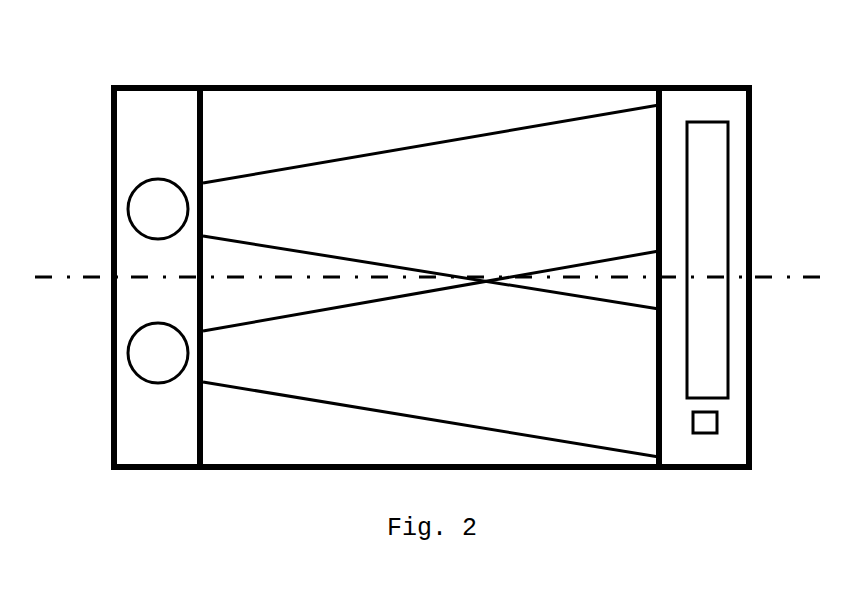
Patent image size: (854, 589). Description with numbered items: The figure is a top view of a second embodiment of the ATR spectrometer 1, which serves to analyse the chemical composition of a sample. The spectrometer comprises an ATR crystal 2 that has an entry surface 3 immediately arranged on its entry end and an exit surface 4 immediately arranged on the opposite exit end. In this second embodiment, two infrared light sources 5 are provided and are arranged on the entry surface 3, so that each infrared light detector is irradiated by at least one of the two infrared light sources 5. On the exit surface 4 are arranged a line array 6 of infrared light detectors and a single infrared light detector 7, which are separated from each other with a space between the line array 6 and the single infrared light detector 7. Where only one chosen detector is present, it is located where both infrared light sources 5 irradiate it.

The ATR spectrometer 1 is at (483, 44).
The ATR crystal 2 is at (250, 87).
The entry surface 3 is at (152, 112).
The exit surface 4 is at (695, 110).
The infrared light source 5 is at (128, 345).
The line array of infrared light detectors 6 is at (730, 155).
The single infrared light detector 7 is at (718, 422).